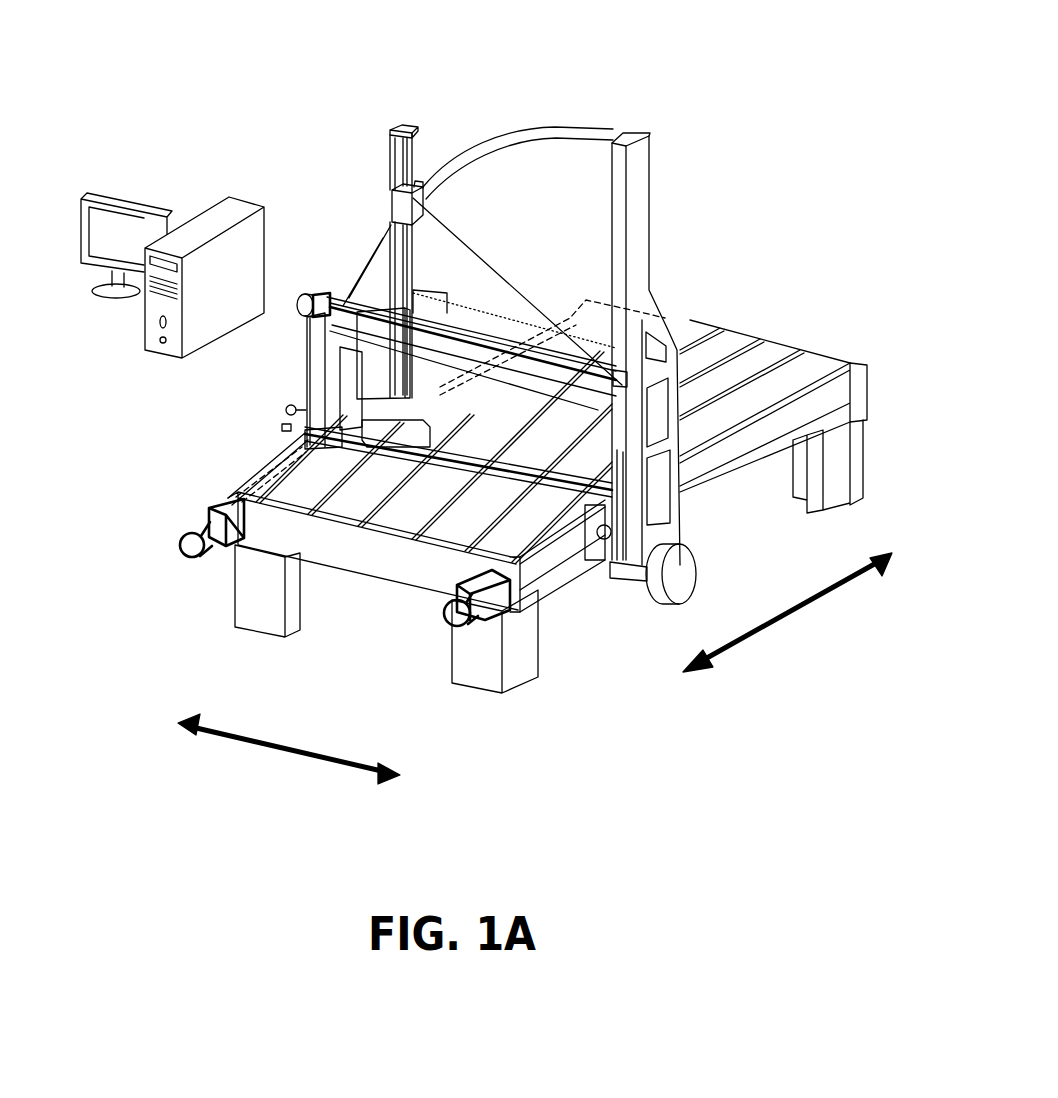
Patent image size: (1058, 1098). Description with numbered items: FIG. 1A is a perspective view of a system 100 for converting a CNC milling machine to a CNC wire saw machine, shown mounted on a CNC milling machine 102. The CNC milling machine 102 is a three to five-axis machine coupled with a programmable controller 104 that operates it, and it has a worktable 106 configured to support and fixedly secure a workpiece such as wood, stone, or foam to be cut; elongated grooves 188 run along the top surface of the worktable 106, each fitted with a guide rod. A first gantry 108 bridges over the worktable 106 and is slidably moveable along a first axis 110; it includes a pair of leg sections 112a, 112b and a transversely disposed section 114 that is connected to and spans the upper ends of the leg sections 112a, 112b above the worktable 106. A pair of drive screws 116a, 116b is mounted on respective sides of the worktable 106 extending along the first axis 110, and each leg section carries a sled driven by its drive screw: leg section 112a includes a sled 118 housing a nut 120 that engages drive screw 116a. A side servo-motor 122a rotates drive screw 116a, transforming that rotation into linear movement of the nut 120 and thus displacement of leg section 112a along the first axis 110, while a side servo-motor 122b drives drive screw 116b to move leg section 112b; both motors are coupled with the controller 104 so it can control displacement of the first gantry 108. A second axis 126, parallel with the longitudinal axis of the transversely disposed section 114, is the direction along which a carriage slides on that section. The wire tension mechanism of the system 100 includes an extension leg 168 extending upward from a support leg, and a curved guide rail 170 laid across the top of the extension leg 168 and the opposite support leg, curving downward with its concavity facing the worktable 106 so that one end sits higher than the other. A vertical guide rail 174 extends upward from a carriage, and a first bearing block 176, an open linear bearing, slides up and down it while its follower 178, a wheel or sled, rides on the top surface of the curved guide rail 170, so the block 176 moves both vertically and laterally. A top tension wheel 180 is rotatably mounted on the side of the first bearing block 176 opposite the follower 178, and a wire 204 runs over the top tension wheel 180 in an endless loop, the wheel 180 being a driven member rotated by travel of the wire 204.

The system 100 is at (674, 184).
The CNC milling machine 102 is at (280, 446).
The controller 104 is at (205, 184).
The worktable 106 is at (848, 350).
The first gantry 108 is at (312, 385).
The first axis 110 is at (808, 610).
The leg section 112a is at (617, 447).
The leg section 112b is at (330, 393).
The transversely disposed section 114 is at (485, 377).
The drive screw 116a is at (535, 575).
The drive screw 116b is at (263, 482).
The sled 118 is at (600, 560).
The nut 120 is at (686, 531).
The side servo-motor 122a is at (488, 622).
The side servo-motor 122b is at (193, 560).
The second axis 126 is at (290, 755).
The extension leg 168 is at (648, 168).
The curved guide rail 170 is at (580, 128).
The vertical guide rail 174 is at (392, 160).
The first bearing block 176 is at (393, 208).
The follower 178 is at (419, 186).
The top tension wheel 180 is at (386, 207).
The elongated grooves 188 is at (822, 356).
The wire 204 is at (490, 285).